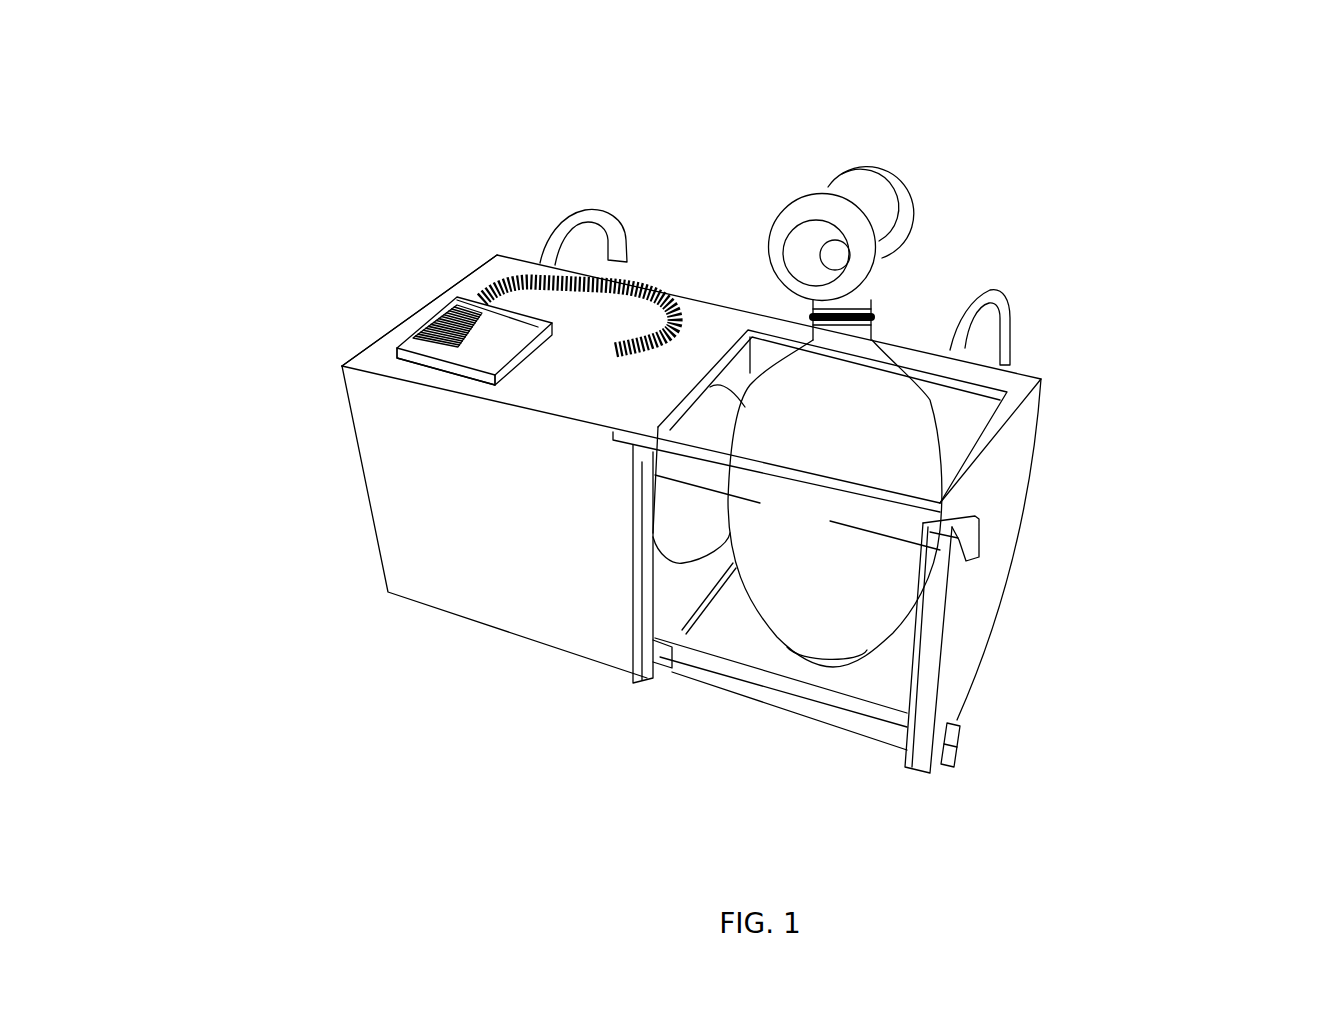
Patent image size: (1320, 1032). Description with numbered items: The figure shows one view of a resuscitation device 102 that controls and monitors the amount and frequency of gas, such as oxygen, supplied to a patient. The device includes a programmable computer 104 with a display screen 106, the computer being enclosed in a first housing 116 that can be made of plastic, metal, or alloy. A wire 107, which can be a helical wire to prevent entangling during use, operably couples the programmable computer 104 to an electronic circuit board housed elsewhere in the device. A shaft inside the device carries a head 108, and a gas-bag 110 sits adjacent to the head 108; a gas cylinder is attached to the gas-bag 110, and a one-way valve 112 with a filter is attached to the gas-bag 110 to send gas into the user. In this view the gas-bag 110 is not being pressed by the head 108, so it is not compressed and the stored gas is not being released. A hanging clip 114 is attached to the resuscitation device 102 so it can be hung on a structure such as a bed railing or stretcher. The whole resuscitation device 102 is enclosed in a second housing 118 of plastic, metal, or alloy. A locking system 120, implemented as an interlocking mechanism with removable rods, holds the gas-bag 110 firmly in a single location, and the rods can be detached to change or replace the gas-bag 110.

The resuscitation device 102 is at (186, 84).
The programmable computer 104 is at (447, 313).
The display screen 106 is at (497, 345).
The wire 107 is at (520, 265).
The head 108 is at (700, 527).
The gas-bag 110 is at (833, 437).
The valve 112 is at (839, 250).
The hanging clip 114 is at (980, 297).
The first housing 116 is at (433, 358).
The second housing 118 is at (367, 358).
The locking system 120 is at (888, 525).